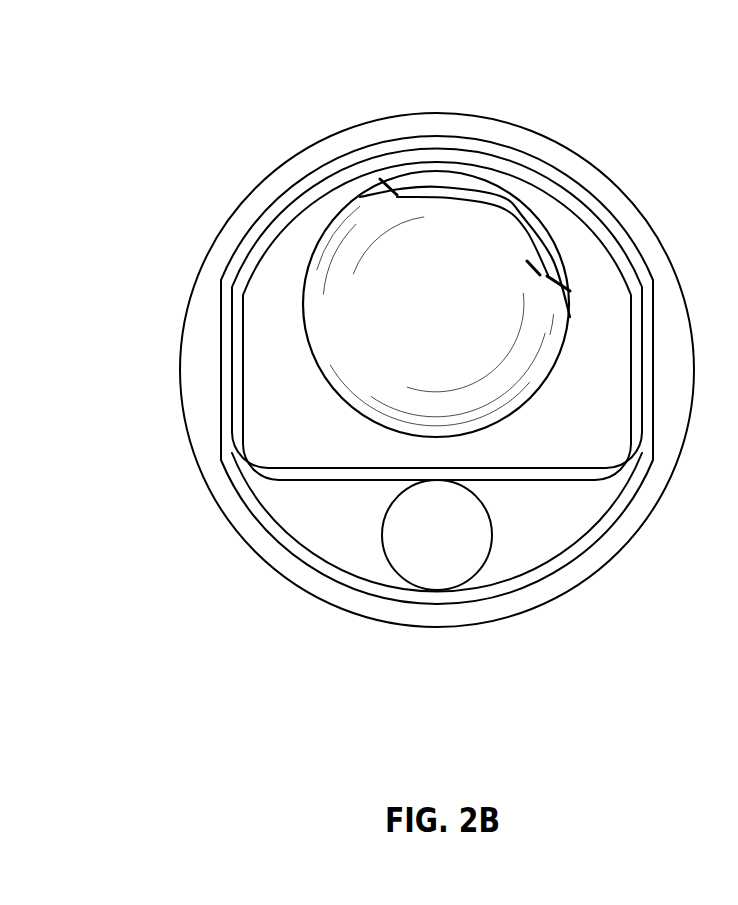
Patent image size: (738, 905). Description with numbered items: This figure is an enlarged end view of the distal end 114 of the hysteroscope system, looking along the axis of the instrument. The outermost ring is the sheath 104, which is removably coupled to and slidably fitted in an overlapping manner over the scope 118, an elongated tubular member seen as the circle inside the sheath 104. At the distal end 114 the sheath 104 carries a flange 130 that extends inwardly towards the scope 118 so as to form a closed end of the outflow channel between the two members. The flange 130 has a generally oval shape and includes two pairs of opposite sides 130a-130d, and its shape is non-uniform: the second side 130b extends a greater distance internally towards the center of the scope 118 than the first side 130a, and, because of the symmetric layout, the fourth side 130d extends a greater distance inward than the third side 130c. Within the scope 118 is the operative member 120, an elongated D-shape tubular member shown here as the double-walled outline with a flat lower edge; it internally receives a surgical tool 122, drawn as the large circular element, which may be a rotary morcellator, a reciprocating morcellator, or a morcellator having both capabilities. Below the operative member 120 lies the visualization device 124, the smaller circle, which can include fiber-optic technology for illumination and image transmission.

The sheath 104 is at (485, 113).
The distal end 114 is at (252, 112).
The scope 118 is at (293, 192).
The operative member 120 is at (268, 232).
The surgical tool 122 is at (433, 325).
The visualization device 124 is at (420, 563).
The flange 130 is at (610, 190).
The first side 130a is at (407, 130).
The second side 130b is at (677, 390).
The third side 130c is at (468, 612).
The fourth side 130d is at (200, 370).